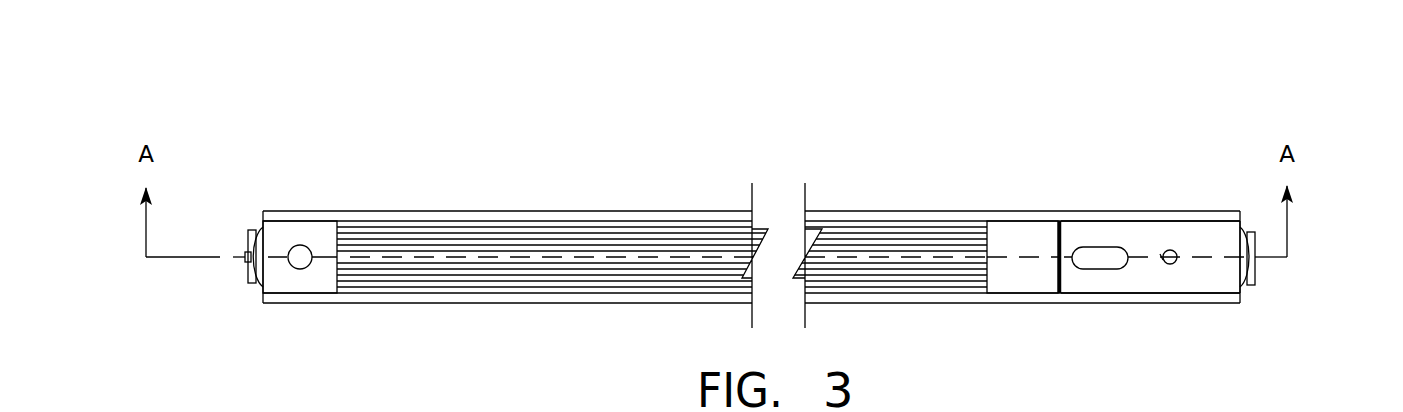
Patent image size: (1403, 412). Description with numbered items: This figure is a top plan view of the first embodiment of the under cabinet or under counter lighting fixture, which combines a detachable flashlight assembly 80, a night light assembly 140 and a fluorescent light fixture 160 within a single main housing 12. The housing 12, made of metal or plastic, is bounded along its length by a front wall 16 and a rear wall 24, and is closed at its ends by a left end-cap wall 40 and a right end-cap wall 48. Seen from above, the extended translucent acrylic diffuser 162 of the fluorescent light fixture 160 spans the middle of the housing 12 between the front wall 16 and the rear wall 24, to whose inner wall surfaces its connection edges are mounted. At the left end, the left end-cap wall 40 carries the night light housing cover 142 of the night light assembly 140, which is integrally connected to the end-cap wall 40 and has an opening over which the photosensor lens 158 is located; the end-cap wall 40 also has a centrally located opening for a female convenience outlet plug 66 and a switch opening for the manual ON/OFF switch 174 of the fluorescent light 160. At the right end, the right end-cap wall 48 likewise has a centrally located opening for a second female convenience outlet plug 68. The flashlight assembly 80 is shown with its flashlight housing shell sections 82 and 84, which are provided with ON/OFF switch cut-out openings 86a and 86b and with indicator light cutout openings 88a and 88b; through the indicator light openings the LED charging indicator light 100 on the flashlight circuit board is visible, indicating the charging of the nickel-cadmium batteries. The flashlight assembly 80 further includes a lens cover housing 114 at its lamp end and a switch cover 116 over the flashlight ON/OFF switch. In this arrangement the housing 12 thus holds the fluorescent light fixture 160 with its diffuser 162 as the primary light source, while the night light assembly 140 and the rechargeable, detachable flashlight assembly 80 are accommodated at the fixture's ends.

The main housing 12 is at (556, 312).
The front wall 16 is at (439, 312).
The rear wall 24 is at (424, 200).
The left end-cap wall 40 is at (254, 216).
The right end-cap wall 48 is at (1248, 302).
The female convenience outlet plug 66 is at (248, 238).
The female convenience outlet plug 68 is at (1256, 277).
The flashlight assembly 80 is at (1052, 203).
The flashlight housing shell section 82 is at (1213, 230).
The flashlight housing shell section 84 is at (1208, 285).
The ON/OFF switch cut-out opening 86a is at (1118, 247).
The ON/OFF switch cut-out opening 86b is at (1102, 270).
The indicator light cutout opening 88a is at (1173, 250).
The indicator light cutout opening 88b is at (1168, 264).
The LED charging indicator light 100 is at (1165, 250).
The lens cover housing 114 is at (1033, 235).
The switch cover 116 is at (1105, 247).
The night light assembly 140 is at (259, 182).
The night light housing cover 142 is at (293, 282).
The photosensor lens 158 is at (293, 245).
The fluorescent light fixture 160 is at (605, 199).
The translucent acrylic diffuser 162 is at (723, 235).
The manual ON/OFF switch 174 is at (247, 261).